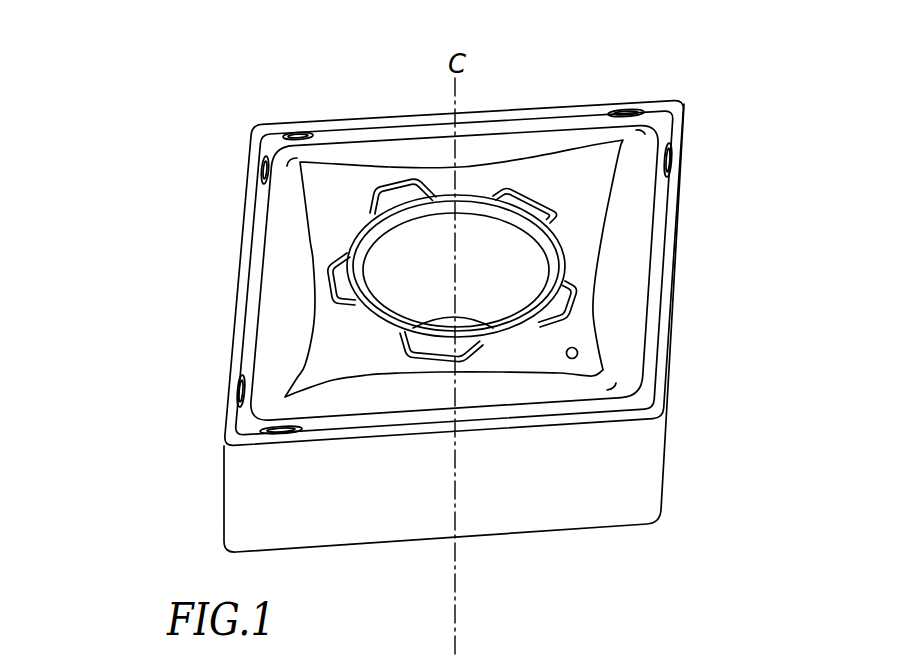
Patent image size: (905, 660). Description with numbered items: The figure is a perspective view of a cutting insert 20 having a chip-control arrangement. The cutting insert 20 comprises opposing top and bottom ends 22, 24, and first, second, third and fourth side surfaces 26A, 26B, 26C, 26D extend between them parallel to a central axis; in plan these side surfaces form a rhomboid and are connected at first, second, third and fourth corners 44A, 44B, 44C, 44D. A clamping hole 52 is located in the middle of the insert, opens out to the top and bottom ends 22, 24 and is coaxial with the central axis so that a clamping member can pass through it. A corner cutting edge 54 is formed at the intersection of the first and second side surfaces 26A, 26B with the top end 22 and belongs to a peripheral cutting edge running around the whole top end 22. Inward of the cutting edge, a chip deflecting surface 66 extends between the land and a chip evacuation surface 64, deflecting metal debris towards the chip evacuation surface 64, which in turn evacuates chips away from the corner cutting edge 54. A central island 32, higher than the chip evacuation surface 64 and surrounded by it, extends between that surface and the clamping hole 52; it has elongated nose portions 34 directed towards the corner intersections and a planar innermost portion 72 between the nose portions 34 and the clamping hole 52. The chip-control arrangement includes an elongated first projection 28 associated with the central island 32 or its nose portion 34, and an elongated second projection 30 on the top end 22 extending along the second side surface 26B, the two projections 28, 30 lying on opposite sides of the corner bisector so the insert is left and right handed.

The cutting insert 20 is at (132, 125).
The top end 22 is at (583, 82).
The bottom end 24 is at (553, 558).
The first side surface 26A is at (380, 510).
The second side surface 26B is at (248, 188).
The third side surface 26C is at (397, 115).
The fourth side surface 26D is at (682, 210).
The first projection 28 is at (283, 433).
The second projection 30 is at (240, 390).
The central island 32 is at (322, 203).
The elongated nose portion 34 is at (283, 365).
The first corner 44A is at (198, 450).
The second corner 44B is at (243, 115).
The third corner 44C is at (695, 88).
The fourth corner 44D is at (672, 433).
The clamping hole 52 is at (507, 288).
The corner cutting edge 54 is at (222, 417).
The chip evacuation surface 64 is at (588, 215).
The chip deflecting surface 66 is at (655, 278).
The innermost portion 72 is at (582, 334).